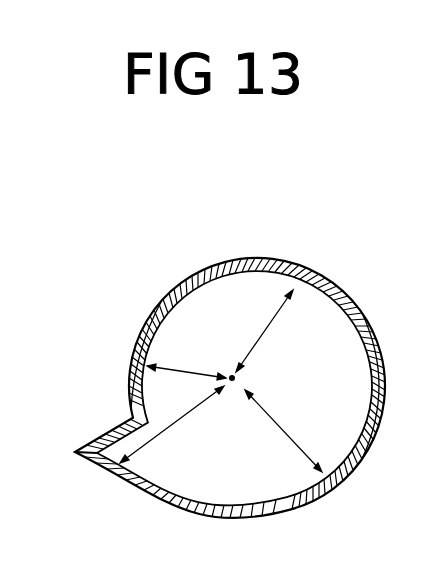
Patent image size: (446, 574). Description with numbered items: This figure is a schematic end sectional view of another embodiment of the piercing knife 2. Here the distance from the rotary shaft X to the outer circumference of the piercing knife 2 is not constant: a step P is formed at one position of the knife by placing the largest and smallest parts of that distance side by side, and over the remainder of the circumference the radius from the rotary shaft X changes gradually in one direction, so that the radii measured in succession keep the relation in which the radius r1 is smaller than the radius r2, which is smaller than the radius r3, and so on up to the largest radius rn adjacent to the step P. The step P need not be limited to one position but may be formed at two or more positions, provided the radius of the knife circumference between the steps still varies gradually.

The piercing knife 2 is at (368, 326).
The step P is at (107, 435).
The rotary shaft X is at (273, 355).
The radius r1 is at (186, 353).
The radius r2 is at (264, 331).
The radius r3 is at (283, 431).
The radius rn is at (172, 424).